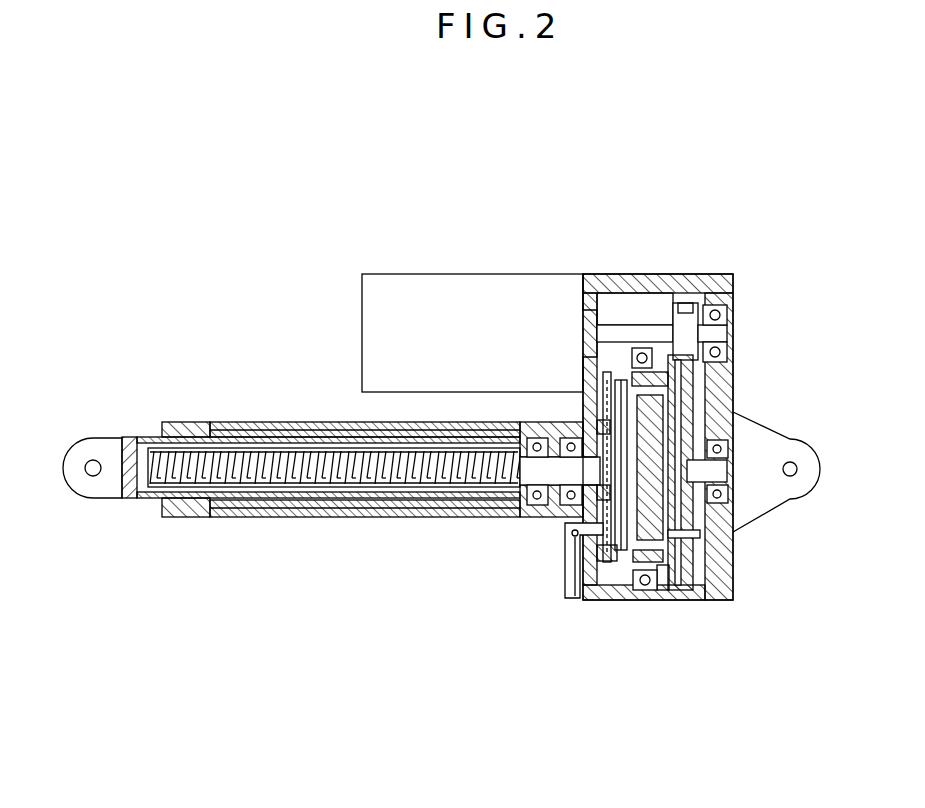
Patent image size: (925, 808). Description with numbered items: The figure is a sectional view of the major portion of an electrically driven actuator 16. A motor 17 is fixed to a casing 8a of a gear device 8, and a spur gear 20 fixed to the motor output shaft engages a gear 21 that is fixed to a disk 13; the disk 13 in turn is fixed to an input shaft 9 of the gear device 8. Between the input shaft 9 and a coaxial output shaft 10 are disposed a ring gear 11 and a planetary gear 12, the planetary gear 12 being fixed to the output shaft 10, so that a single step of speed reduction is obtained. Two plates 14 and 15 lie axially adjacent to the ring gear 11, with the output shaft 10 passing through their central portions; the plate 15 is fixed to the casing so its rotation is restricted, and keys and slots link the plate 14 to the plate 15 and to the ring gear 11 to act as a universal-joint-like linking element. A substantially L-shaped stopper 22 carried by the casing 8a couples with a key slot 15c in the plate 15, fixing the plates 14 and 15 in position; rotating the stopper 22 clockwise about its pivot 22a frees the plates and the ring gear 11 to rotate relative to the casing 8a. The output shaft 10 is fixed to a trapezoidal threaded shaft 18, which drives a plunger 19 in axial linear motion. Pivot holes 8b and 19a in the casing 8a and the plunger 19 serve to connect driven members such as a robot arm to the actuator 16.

The electrically driven actuator 16 is at (370, 212).
The motor 17 is at (492, 290).
The gear device 8 is at (728, 567).
The casing 8a is at (632, 286).
The pivot hole 8b is at (794, 462).
The gear 20 is at (686, 312).
The input shaft 9 is at (714, 474).
The planetary gear 12 is at (658, 506).
The gear 21 is at (708, 560).
The disk 13 is at (676, 600).
The ring gear 11 is at (666, 556).
The plate 14 is at (627, 560).
The plate 15 is at (608, 562).
The key slot 15c is at (598, 560).
The stopper 22 is at (566, 590).
The pivot 22a is at (568, 530).
The output shaft 10 is at (557, 500).
The threaded shaft 18 is at (366, 477).
The plunger 19 is at (102, 500).
The pivot hole 19a is at (93, 475).